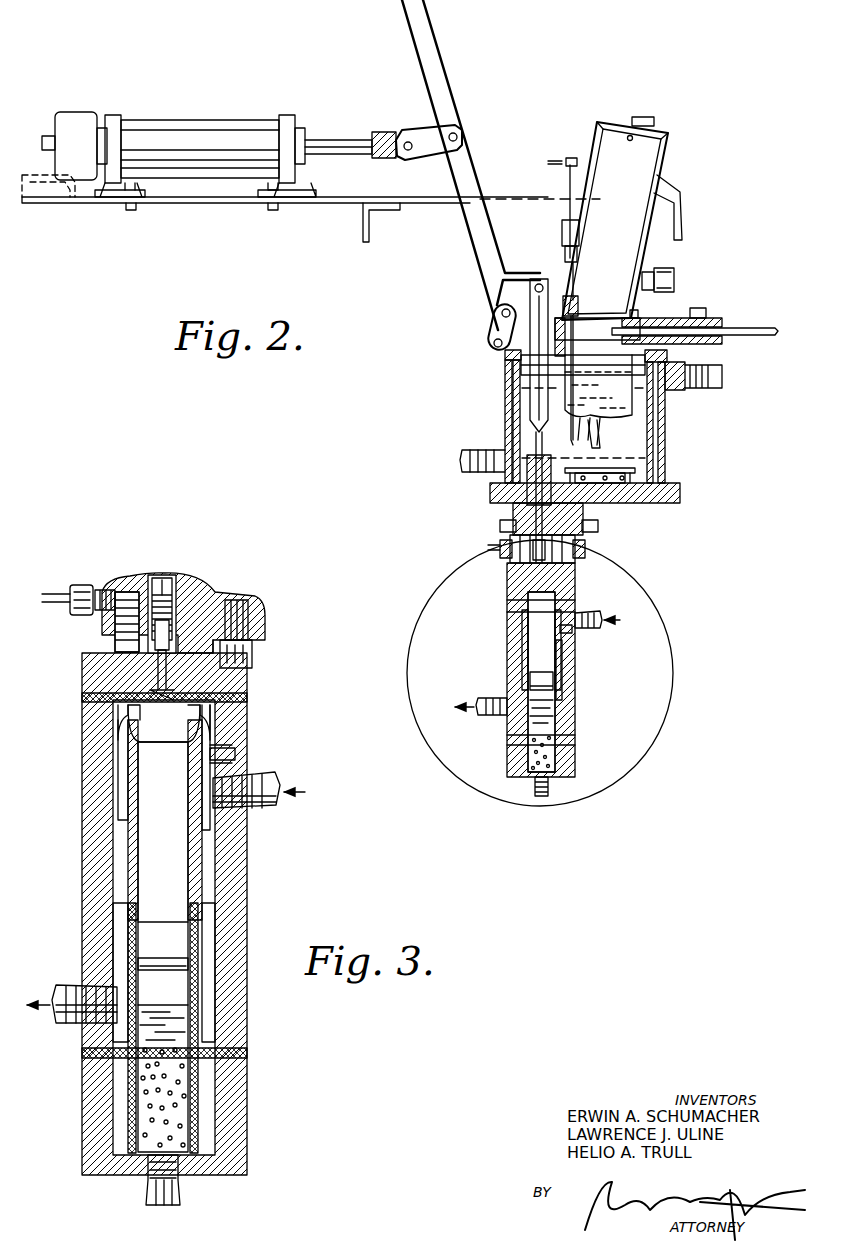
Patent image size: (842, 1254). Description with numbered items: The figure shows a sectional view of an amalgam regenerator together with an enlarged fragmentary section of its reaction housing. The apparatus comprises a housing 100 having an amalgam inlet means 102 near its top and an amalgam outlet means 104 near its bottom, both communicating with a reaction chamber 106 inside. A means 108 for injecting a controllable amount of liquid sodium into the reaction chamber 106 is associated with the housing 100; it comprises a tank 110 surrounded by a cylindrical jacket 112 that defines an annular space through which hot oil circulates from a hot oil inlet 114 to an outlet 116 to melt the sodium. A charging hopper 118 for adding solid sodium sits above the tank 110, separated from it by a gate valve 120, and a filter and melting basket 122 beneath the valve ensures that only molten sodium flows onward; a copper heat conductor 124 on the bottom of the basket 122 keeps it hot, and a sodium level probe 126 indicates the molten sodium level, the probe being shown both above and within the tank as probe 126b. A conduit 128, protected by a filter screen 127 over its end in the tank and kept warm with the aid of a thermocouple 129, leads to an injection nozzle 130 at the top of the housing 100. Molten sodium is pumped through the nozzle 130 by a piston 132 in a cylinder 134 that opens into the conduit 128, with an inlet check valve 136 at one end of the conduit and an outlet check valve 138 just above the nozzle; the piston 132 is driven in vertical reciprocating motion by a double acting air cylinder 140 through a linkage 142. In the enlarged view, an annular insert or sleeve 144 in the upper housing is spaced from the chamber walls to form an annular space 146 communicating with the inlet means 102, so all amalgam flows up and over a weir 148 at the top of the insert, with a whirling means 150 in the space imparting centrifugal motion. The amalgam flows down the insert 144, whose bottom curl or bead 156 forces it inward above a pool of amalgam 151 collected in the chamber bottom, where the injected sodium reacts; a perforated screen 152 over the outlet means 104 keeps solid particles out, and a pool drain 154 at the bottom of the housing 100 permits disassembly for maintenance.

In FIG. 2, the housing 100 is at (578, 668).
In FIG. 3, the housing 100 is at (237, 876).
In FIG. 2, the amalgam inlet means 102 is at (592, 611).
In FIG. 3, the amalgam inlet means 102 is at (280, 789).
In FIG. 2, the amalgam outlet means 104 is at (490, 697).
In FIG. 3, the amalgam outlet means 104 is at (68, 990).
In FIG. 2, the reaction chamber 106 is at (540, 651).
In FIG. 3, the reaction chamber 106 is at (165, 843).
In FIG. 2, the means for injecting liquid sodium 108 is at (503, 373).
In FIG. 2, the tank 110 is at (662, 430).
In FIG. 2, the cylindrical jacket 112 is at (660, 455).
In FIG. 2, the hot oil inlet 114 is at (465, 453).
In FIG. 2, the hot oil outlet 116 is at (705, 374).
In FIG. 2, the charging hopper 118 is at (645, 252).
In FIG. 2, the gate valve 120 is at (752, 329).
In FIG. 2, the filter and melting basket 122 is at (630, 415).
In FIG. 2, the heat conductor 124 is at (600, 436).
In FIG. 2, the sodium level probe 126 is at (568, 214).
In FIG. 2, the probe rod (lower) 126b is at (535, 447).
In FIG. 2, the filter screen 127 is at (640, 485).
In FIG. 2, the conduit 128 is at (582, 547).
In FIG. 3, the conduit 128 is at (165, 577).
In FIG. 2, the thermocouple 129 is at (500, 549).
In FIG. 3, the thermocouple 129 is at (82, 590).
In FIG. 2, the injection nozzle 130 is at (522, 586).
In FIG. 3, the injection nozzle 130 is at (150, 666).
In FIG. 2, the piston 132 is at (528, 427).
In FIG. 2, the cylinder 134 is at (526, 513).
In FIG. 2, the inlet check valve 136 is at (565, 511).
In FIG. 2, the outlet check valve 138 is at (545, 561).
In FIG. 3, the outlet check valve 138 is at (175, 608).
In FIG. 2, the double acting air cylinder 140 is at (183, 137).
In FIG. 2, the linkage 142 is at (482, 228).
In FIG. 2, the annular insert or sleeve 144 is at (528, 634).
In FIG. 3, the annular insert or sleeve 144 is at (207, 829).
In FIG. 2, the annular space 146 is at (566, 629).
In FIG. 3, the annular space 146 is at (212, 757).
In FIG. 3, the weir 148 is at (135, 713).
In FIG. 2, the whirling means 150 is at (522, 610).
In FIG. 3, the whirling means 150 is at (120, 742).
In FIG. 2, the pool of amalgam 151 is at (552, 745).
In FIG. 3, the pool of amalgam 151 is at (195, 1038).
In FIG. 2, the screen 152 is at (555, 716).
In FIG. 3, the screen 152 is at (198, 996).
In FIG. 2, the pool drain 154 is at (534, 787).
In FIG. 3, the pool drain 154 is at (152, 1194).
In FIG. 2, the curl or bead 156 is at (555, 687).
In FIG. 3, the curl or bead 156 is at (192, 961).